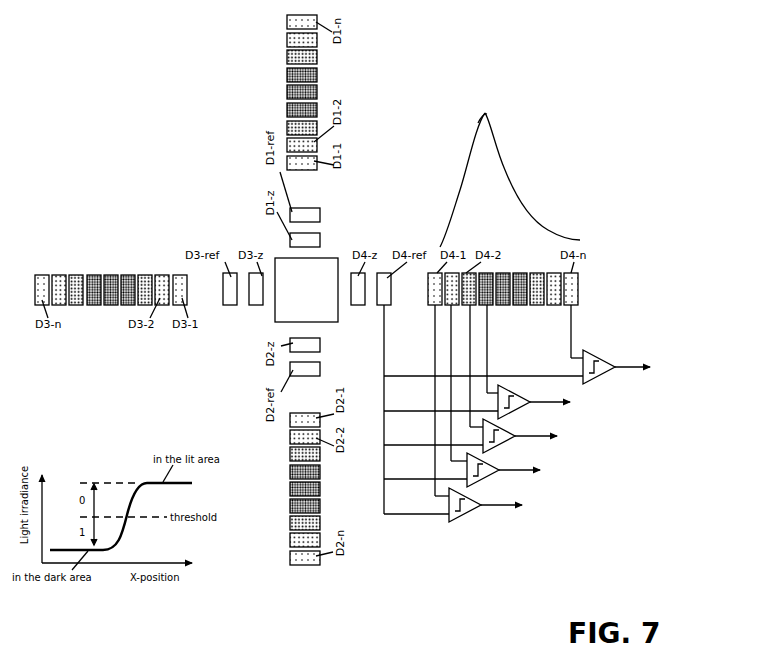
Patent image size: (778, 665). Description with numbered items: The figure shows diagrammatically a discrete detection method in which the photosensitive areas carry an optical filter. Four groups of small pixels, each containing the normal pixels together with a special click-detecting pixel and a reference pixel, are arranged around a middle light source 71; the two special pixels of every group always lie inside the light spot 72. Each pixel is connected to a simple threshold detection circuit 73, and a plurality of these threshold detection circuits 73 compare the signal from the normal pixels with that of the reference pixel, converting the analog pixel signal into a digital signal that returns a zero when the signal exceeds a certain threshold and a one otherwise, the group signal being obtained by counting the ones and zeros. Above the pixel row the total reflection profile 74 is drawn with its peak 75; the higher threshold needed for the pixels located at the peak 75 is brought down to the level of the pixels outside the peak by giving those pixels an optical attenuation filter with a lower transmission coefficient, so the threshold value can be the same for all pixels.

The middle light source 71 is at (321, 266).
The light spot 72 is at (143, 220).
The threshold detection circuit 73 is at (490, 481).
The total reflection profile 74 is at (511, 183).
The peak 75 is at (487, 112).